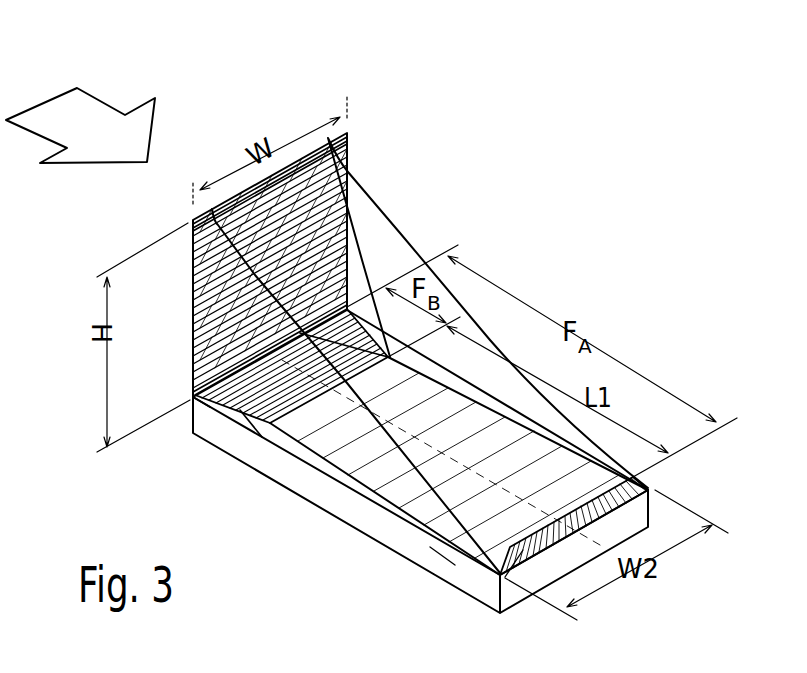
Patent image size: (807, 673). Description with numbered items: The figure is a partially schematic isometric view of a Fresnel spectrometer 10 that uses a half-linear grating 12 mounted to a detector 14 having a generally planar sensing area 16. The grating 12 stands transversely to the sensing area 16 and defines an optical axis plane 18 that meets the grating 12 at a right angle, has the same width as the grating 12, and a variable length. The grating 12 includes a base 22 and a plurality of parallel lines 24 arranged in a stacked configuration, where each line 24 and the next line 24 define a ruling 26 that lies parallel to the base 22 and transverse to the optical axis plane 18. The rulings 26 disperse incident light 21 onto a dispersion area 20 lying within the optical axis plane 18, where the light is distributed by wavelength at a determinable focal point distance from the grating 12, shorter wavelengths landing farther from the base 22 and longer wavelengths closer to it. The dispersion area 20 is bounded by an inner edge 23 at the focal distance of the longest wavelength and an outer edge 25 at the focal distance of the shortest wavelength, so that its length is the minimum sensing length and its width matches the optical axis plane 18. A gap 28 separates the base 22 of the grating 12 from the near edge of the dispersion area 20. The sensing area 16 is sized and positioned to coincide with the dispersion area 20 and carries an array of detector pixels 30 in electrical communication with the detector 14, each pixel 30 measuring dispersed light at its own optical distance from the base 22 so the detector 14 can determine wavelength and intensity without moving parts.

The Fresnel spectrometer 10 is at (536, 172).
The grating 12 is at (307, 157).
The detector 14 is at (282, 488).
The sensing area 16 is at (367, 460).
The optical axis plane 18 is at (650, 487).
The dispersion area 20 is at (430, 547).
The incident light 21 is at (100, 113).
The base 22 is at (190, 404).
The inner edge 23 is at (255, 400).
The parallel lines 24 is at (222, 362).
The outer edge 25 is at (523, 550).
The ruling 26 is at (218, 360).
The gap 28 is at (220, 340).
The detector pixels 30 is at (397, 462).